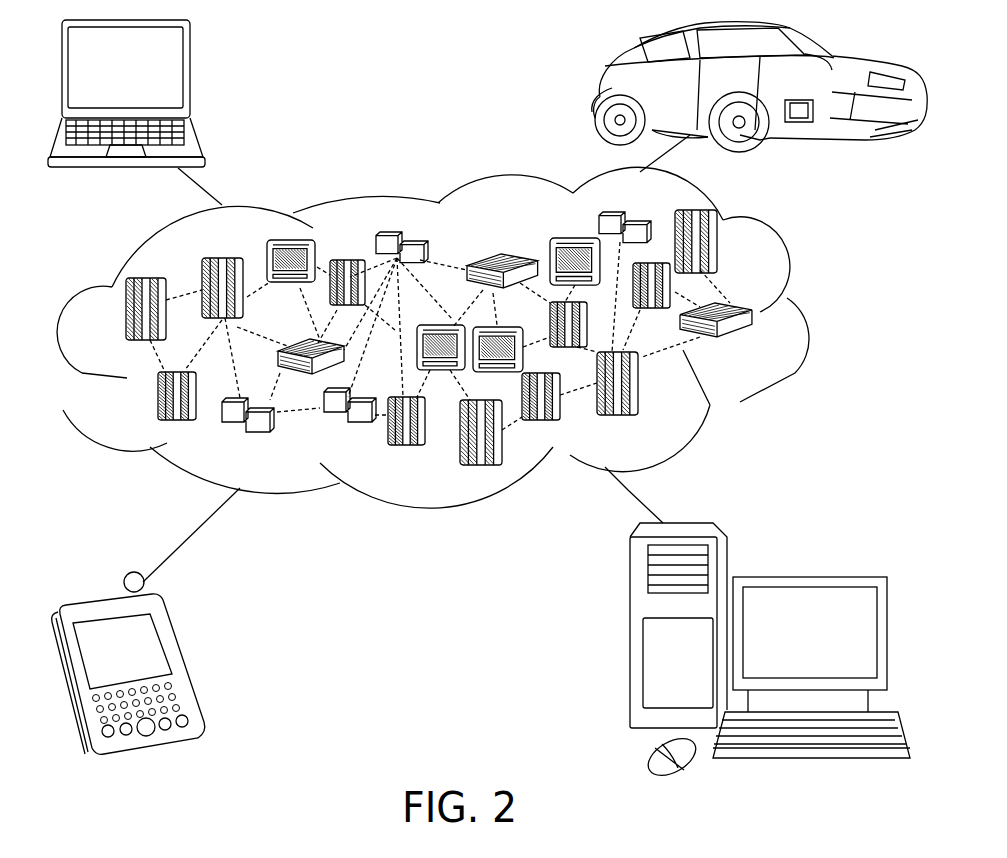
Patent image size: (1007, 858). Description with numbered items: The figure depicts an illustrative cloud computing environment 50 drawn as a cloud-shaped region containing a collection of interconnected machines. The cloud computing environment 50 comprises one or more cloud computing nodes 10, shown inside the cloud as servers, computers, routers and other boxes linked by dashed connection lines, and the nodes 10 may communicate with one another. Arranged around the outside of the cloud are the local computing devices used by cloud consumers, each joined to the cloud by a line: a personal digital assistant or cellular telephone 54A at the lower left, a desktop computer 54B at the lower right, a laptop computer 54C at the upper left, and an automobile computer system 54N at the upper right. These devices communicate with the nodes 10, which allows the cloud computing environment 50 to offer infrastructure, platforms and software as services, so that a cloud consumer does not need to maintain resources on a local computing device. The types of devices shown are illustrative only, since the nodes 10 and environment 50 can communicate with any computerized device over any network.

The cloud computing nodes 10 is at (752, 342).
The cloud computing environment 50 is at (808, 317).
The personal digital assistant (PDA) or cellular telephone 54A is at (183, 655).
The desktop computer 54B is at (807, 573).
The laptop computer 54C is at (190, 73).
The automobile computer system 54N is at (600, 90).